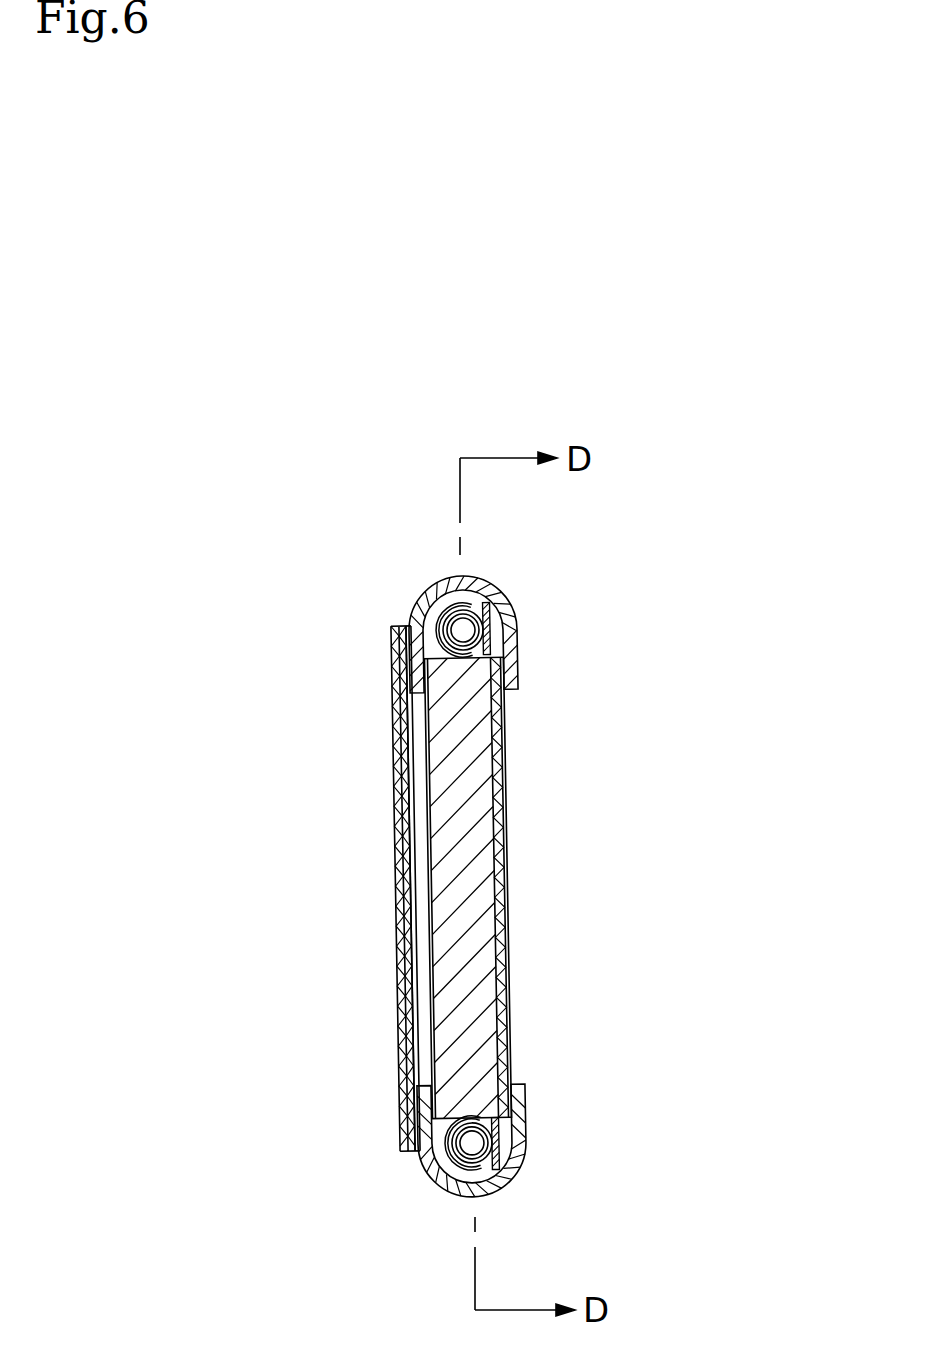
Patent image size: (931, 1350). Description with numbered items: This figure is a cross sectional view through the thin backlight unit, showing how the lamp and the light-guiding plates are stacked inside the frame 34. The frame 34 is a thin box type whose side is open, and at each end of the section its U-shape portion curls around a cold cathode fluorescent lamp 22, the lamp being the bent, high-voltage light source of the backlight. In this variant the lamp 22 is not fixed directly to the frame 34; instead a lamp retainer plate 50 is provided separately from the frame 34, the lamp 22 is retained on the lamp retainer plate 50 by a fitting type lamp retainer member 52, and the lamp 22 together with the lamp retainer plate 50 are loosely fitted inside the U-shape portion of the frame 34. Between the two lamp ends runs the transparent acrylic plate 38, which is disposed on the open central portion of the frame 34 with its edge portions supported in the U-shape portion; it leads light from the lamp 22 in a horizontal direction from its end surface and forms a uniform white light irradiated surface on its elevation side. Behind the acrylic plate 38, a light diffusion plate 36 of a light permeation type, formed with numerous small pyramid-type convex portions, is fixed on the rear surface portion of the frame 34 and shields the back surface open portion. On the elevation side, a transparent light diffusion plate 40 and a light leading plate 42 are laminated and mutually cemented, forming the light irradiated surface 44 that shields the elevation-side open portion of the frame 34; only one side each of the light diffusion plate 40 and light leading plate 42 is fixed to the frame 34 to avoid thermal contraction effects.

The cold cathode fluorescent lamp 22 is at (442, 625).
The frame 34 is at (435, 588).
The light diffusion plate 36 is at (505, 868).
The transparent acrylic plate 38 is at (437, 730).
The transparent light diffusion plate 40 is at (397, 802).
The light leading plate 42 is at (405, 853).
The light irradiated surface 44 is at (400, 926).
The lamp retainer plate 50 is at (490, 622).
The fitting type lamp retainer member 52 is at (467, 603).